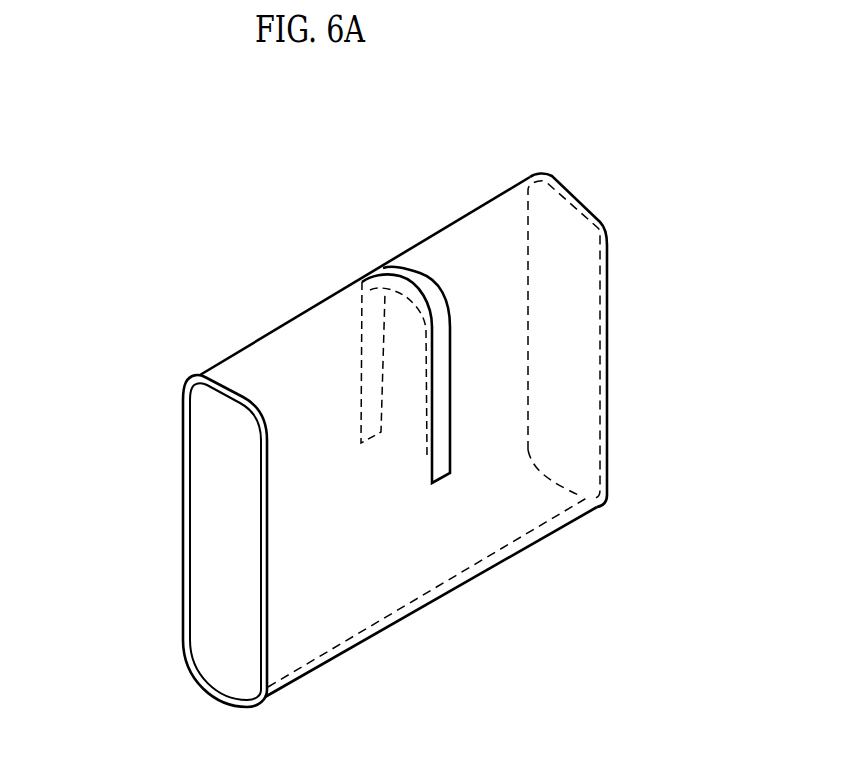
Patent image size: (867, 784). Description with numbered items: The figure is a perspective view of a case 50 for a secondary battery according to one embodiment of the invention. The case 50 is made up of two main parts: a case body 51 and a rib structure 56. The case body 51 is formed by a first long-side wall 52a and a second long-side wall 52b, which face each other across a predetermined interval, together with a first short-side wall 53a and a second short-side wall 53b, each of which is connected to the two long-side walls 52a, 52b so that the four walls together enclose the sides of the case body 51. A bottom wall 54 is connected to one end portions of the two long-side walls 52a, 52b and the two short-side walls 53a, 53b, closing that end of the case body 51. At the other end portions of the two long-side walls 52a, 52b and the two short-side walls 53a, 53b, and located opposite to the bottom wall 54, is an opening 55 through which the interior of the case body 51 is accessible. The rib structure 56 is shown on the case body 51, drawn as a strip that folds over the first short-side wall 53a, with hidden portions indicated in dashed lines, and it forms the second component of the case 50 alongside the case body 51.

The case for secondary battery 50 is at (83, 245).
The case body 51 is at (503, 158).
The first long-side wall 52a is at (184, 540).
The second long-side wall 52b is at (293, 555).
The first short-side wall 53a is at (227, 370).
The second short-side wall 53b is at (213, 697).
The bottom wall 54 is at (608, 365).
The opening 55 is at (215, 463).
The rib structure 56 is at (380, 232).